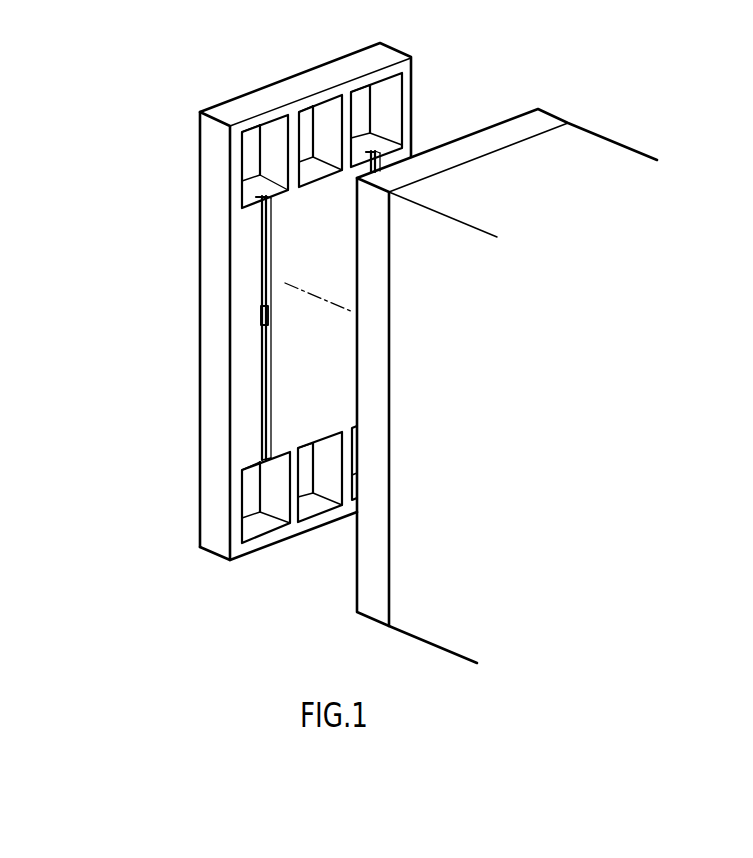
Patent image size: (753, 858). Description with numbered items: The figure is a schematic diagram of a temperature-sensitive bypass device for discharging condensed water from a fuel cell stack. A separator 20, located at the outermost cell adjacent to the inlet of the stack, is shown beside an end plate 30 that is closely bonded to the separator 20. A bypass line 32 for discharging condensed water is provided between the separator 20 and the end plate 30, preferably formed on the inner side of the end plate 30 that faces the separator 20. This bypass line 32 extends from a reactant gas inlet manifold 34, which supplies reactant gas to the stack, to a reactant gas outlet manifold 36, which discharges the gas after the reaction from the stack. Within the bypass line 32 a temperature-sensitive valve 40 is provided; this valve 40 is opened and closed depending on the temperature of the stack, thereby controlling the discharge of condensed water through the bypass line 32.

The separator 20 is at (368, 556).
The end plate 30 is at (188, 395).
The bypass line 32 is at (266, 248).
The inlet manifold 34 is at (270, 147).
The outlet manifold 36 is at (252, 490).
The temperature-sensitive valve 40 is at (250, 317).